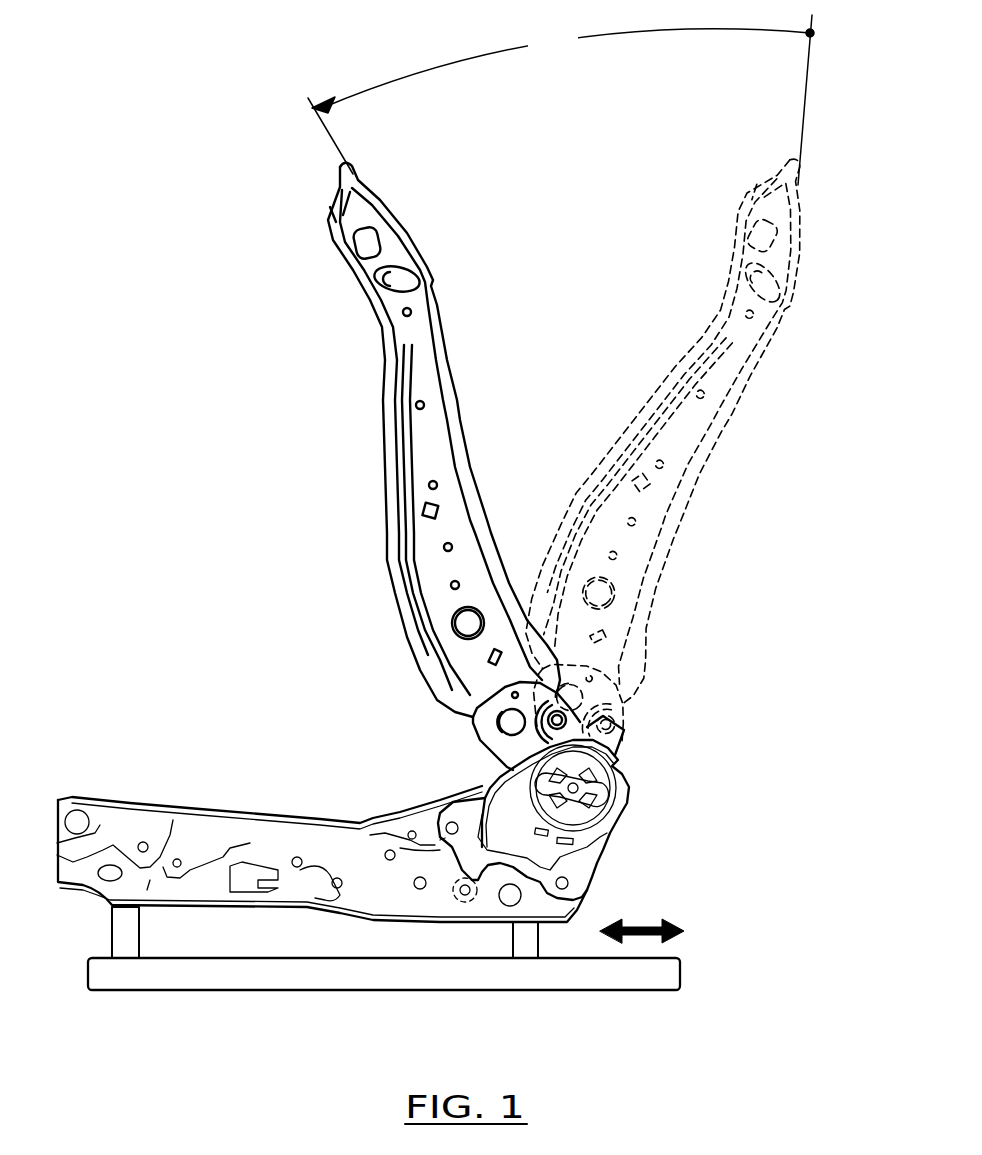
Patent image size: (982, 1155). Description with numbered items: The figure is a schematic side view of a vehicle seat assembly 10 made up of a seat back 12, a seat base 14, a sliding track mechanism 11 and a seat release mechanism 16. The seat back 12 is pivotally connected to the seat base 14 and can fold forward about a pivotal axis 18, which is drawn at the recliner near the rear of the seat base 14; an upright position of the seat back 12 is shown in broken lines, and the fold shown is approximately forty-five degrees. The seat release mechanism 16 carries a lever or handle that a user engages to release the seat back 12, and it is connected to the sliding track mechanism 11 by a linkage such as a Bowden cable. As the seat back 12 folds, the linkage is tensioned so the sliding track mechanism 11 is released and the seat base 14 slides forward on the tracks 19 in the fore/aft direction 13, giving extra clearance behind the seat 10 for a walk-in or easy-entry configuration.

The vehicle seat assembly 10 is at (232, 263).
The sliding track mechanism 11 is at (130, 926).
The seat back 12 is at (415, 440).
The fore/aft direction 13 is at (642, 919).
The seat base 14 is at (145, 828).
The seat release mechanism 16 is at (606, 800).
The pivotal axis 18 is at (578, 790).
The tracks 19 is at (277, 975).